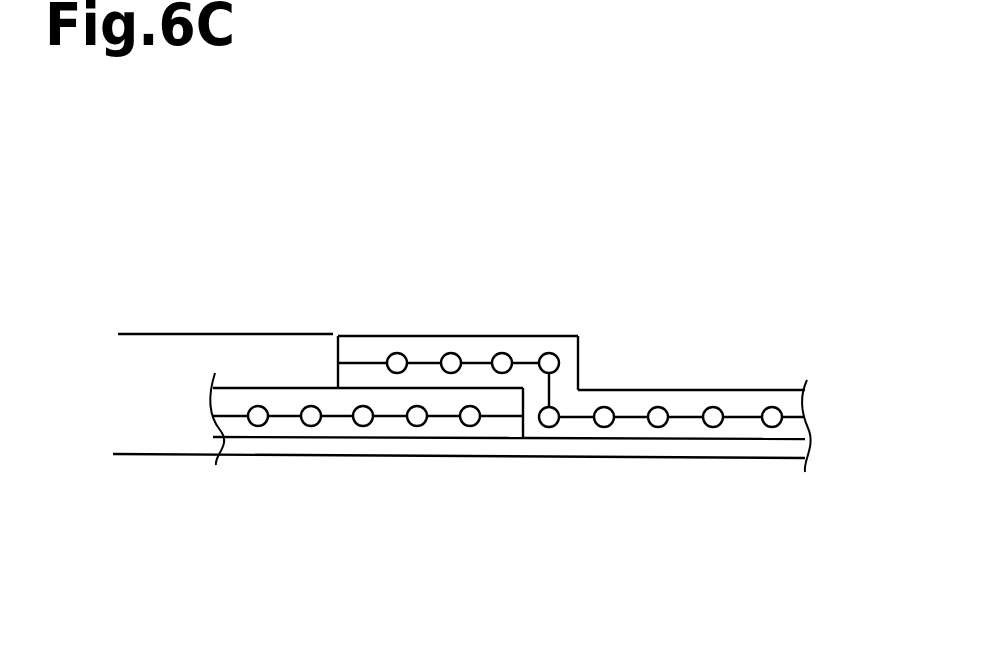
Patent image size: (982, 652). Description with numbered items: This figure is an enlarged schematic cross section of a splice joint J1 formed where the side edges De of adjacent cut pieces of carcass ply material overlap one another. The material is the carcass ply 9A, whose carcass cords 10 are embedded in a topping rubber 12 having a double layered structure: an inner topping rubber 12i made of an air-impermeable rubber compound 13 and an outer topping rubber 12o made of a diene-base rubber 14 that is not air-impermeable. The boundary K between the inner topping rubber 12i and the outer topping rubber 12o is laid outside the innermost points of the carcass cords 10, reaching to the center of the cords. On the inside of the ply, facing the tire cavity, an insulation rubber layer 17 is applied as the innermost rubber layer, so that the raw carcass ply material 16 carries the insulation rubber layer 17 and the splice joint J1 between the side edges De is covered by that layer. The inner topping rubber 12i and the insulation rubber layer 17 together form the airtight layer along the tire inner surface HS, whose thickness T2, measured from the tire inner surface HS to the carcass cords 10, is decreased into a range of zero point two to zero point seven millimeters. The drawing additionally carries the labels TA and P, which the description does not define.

The topping rubber 12 is at (257, 209).
The inner topping rubber 12i is at (148, 347).
The air-impermeable rubber compound 13 is at (213, 423).
The outer topping rubber 12o is at (213, 312).
The diene-base rubber 14 is at (248, 395).
The side edges De is at (411, 337).
The splice joint J1 is at (520, 322).
The carcass ply 9A is at (693, 348).
The boundary K is at (628, 418).
The carcass cords 10 is at (715, 410).
The total thickness TA is at (123, 334).
The thickness of the airtight layer T2 is at (782, 427).
The tire inner surface HS is at (292, 456).
The insulating plate P is at (620, 440).
The raw carcass ply material 16 is at (730, 432).
The insulation rubber layer 17 is at (768, 452).